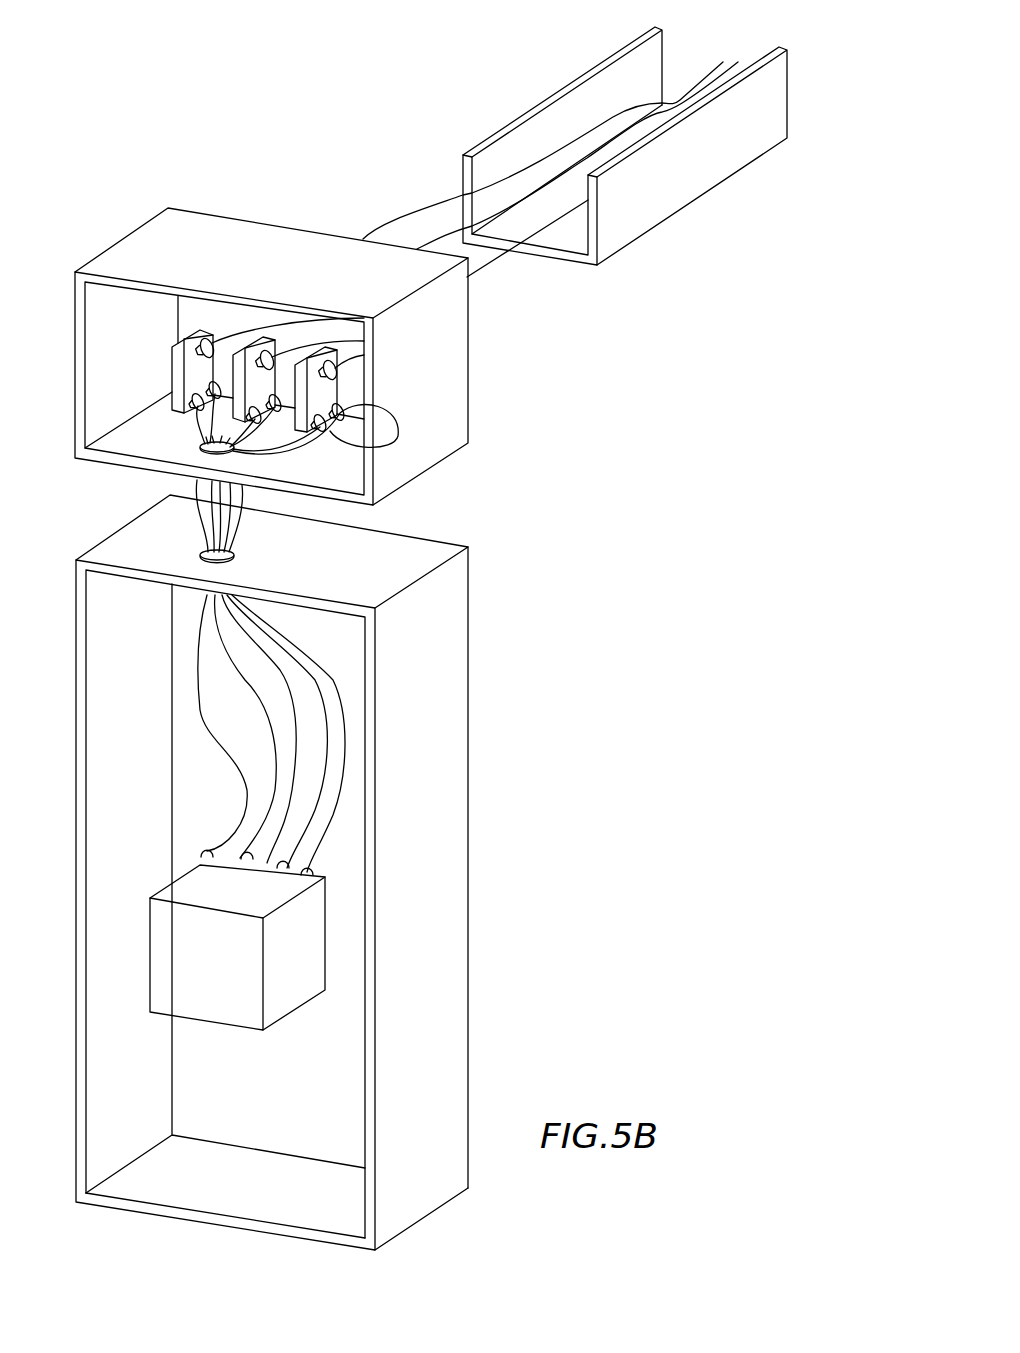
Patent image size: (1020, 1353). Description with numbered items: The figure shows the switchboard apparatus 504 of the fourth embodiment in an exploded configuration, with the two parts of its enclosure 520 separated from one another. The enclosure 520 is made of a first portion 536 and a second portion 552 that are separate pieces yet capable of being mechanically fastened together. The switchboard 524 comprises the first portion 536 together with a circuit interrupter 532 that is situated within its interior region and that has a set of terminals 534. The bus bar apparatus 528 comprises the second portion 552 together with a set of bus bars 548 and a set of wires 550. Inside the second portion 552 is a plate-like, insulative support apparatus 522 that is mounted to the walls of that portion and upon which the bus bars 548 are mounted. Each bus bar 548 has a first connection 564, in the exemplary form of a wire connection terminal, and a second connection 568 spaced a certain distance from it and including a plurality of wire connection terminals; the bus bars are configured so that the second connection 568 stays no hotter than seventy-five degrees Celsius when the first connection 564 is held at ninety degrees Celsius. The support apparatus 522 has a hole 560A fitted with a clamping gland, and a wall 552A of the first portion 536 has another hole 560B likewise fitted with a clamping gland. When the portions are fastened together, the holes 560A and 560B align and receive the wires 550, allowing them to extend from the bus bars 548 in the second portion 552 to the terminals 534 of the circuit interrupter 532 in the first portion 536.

The switchboard apparatus 504 is at (326, 872).
The enclosure 520 is at (318, 872).
The support apparatus 522 is at (118, 438).
The switchboard 524 is at (486, 1006).
The bus bar apparatus 528 is at (262, 360).
The circuit interrupter 532 is at (237, 970).
The set of terminals 534 is at (283, 868).
The first portion 536 is at (468, 340).
The bus bars 548 is at (193, 332).
The wires 550 is at (277, 687).
The second portion 552 is at (470, 831).
The wall 552A is at (428, 552).
The hole 560A is at (199, 451).
The hole 560B is at (202, 566).
The first connection 564 is at (203, 336).
The second connection 568 is at (210, 383).